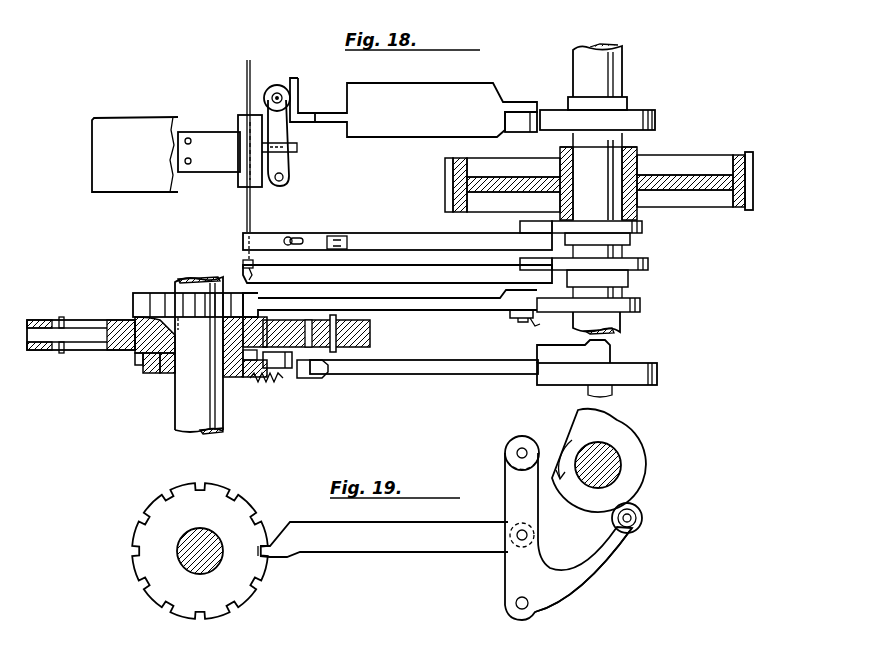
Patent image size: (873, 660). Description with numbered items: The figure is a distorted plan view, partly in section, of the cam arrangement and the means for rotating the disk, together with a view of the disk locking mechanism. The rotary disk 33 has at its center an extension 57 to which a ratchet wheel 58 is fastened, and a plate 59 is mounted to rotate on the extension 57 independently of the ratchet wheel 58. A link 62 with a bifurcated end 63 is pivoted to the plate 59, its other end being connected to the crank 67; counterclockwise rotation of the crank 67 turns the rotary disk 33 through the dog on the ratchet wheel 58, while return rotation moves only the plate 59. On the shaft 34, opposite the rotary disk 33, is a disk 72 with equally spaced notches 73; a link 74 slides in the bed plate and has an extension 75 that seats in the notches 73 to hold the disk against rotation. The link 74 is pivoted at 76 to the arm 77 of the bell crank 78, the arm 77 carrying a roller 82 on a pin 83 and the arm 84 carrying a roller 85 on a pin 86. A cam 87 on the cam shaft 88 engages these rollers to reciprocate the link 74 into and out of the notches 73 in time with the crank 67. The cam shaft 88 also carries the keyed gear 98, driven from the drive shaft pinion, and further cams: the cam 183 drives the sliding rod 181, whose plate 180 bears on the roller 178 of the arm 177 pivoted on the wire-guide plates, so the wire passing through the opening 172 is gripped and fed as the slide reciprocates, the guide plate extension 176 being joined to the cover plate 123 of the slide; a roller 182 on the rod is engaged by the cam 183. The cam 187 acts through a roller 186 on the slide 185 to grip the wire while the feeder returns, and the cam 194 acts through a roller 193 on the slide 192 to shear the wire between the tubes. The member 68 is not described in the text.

In FIG. 18, the cover plate 123 is at (150, 108).
In FIG. 18, the extension 176 is at (192, 130).
In FIG. 18, the opening 172 is at (264, 187).
In FIG. 18, the roller 178 is at (276, 84).
In FIG. 18, the plate 180 is at (296, 78).
In FIG. 18, the arm 177 is at (284, 172).
In FIG. 18, the sliding rod 181 is at (322, 100).
In FIG. 18, the roller 182 is at (514, 132).
In FIG. 18, the cam shaft 88 is at (605, 62).
In FIG. 19, the cam shaft 88 is at (625, 468).
In FIG. 18, the cam 183 is at (655, 116).
In FIG. 18, the gear 98 is at (700, 162).
In FIG. 18, the slide 192 is at (445, 278).
In FIG. 18, the roller 186 is at (522, 226).
In FIG. 18, the cam 187 is at (645, 226).
In FIG. 18, the roller 193 is at (520, 264).
In FIG. 18, the cam 194 is at (648, 262).
In FIG. 19, the cam 194 is at (644, 652).
In FIG. 18, the cam 87 is at (640, 300).
In FIG. 19, the cam 87 is at (625, 436).
In FIG. 18, the slide 185 is at (392, 232).
In FIG. 18, the link 74 is at (418, 300).
In FIG. 19, the link 74 is at (352, 548).
In FIG. 18, the roller 82 is at (512, 312).
In FIG. 19, the roller 82 is at (520, 438).
In FIG. 18, the arm 77 is at (531, 331).
In FIG. 19, the arm 77 is at (507, 494).
In FIG. 18, the disk 72 is at (148, 300).
In FIG. 19, the disk 72 is at (155, 602).
In FIG. 18, the shaft 34 is at (186, 412).
In FIG. 19, the shaft 34 is at (204, 558).
In FIG. 18, the rotary disk 33 is at (42, 322).
In FIG. 18, the ratchet wheel 58 is at (134, 360).
In FIG. 18, the plate 59 is at (138, 366).
In FIG. 18, the extension 57 is at (168, 372).
In FIG. 18, the link 62 is at (440, 360).
In FIG. 18, the bifurcated end 63 is at (310, 380).
In FIG. 18, the arm 68 is at (610, 355).
In FIG. 18, the crank 67 is at (640, 372).
In FIG. 19, the notches 73 is at (135, 555).
In FIG. 19, the extension 75 is at (275, 560).
In FIG. 19, the pin 83 is at (518, 452).
In FIG. 19, the pivot 76 is at (536, 525).
In FIG. 19, the bell crank 78 is at (533, 608).
In FIG. 19, the arm 84 is at (606, 558).
In FIG. 19, the roller 85 is at (642, 518).
In FIG. 19, the pin 86 is at (632, 530).